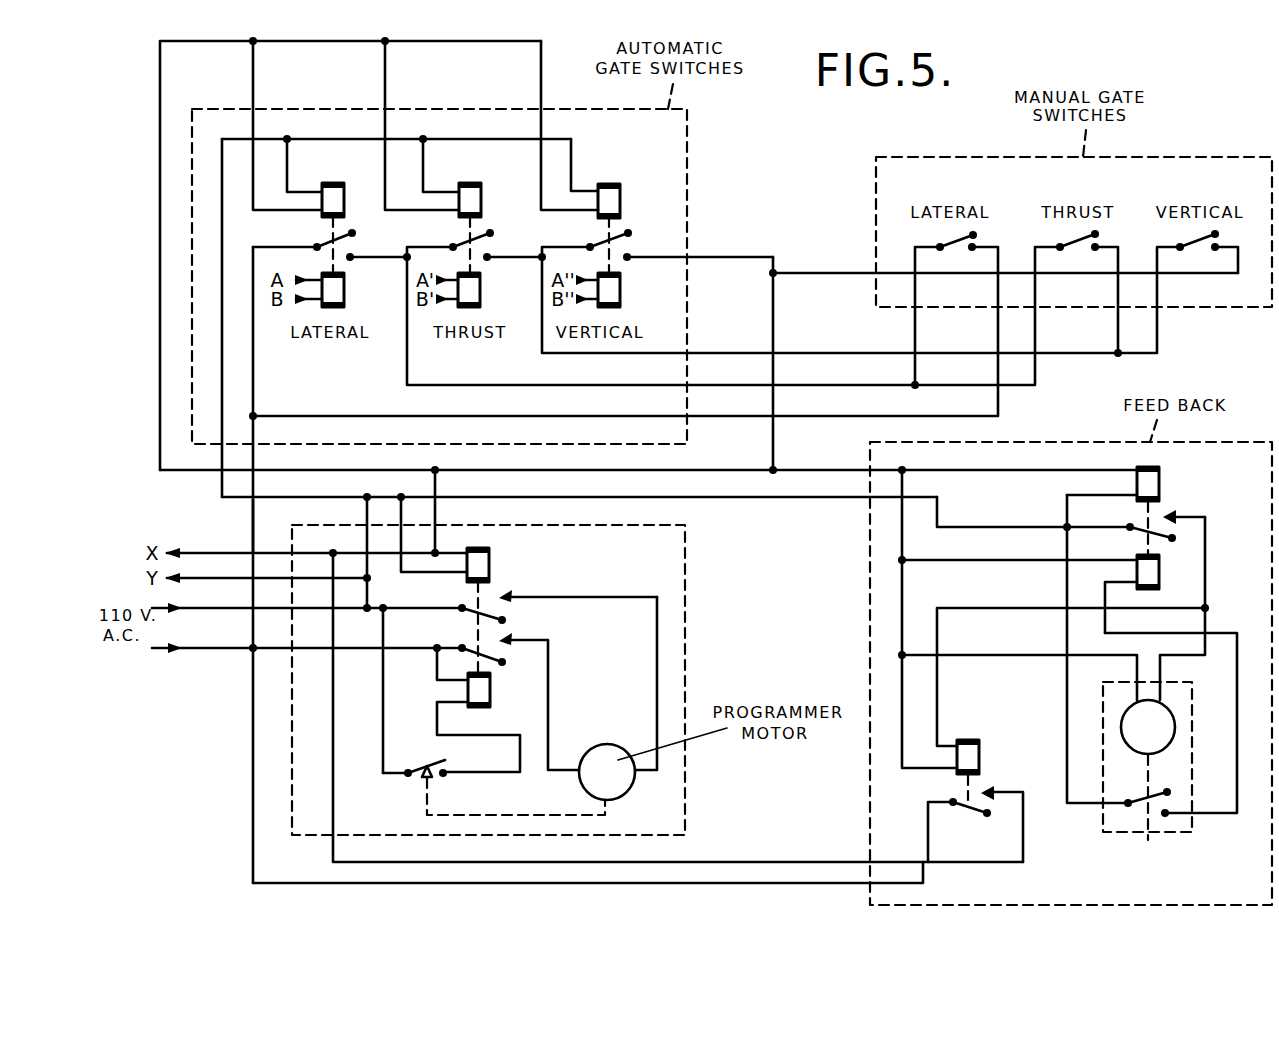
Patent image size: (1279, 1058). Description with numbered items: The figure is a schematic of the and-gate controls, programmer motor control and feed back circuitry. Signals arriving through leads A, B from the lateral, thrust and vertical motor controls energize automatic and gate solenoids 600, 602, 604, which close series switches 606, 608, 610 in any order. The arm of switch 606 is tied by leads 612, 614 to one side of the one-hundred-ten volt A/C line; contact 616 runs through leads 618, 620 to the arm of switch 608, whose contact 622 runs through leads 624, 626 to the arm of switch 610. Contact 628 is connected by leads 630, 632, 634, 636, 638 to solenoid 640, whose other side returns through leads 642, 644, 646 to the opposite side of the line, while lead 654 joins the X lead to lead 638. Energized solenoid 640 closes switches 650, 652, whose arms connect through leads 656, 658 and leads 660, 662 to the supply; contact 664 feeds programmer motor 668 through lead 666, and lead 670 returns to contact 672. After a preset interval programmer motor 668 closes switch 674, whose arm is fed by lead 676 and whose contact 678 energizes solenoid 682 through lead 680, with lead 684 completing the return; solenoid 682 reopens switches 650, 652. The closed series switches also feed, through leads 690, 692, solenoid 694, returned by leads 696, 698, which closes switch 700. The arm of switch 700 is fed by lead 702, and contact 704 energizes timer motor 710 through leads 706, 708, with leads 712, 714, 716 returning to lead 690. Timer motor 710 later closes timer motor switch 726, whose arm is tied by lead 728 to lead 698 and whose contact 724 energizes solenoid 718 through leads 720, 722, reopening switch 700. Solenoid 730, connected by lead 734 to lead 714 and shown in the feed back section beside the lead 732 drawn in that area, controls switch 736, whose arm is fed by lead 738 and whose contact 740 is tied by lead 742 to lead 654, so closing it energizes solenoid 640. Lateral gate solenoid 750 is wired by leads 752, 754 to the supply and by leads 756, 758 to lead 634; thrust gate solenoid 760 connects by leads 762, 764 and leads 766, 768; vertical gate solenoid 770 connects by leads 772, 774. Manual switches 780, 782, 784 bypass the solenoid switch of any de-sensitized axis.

The automatic and gate solenoid 600 is at (346, 296).
The automatic and gate solenoid 602 is at (482, 297).
The automatic and gate solenoid 604 is at (620, 292).
The switch 606 is at (317, 246).
The switch 608 is at (474, 236).
The switch 610 is at (612, 243).
The lead 612 is at (253, 380).
The lead 614 is at (253, 525).
The contact 616 is at (352, 256).
The lead 618 is at (385, 258).
The lead 620 is at (428, 247).
The contact 622 is at (490, 256).
The lead 624 is at (518, 258).
The lead 626 is at (584, 247).
The contact 628 is at (630, 256).
The lead 630 is at (735, 257).
The lead 632 is at (773, 321).
The lead 634 is at (721, 470).
The lead 636 is at (435, 486).
The lead 638 is at (460, 548).
The solenoid 640 is at (490, 563).
The lead 642 is at (447, 573).
The lead 644 is at (370, 497).
The lead 646 is at (367, 512).
The switch 650 is at (497, 602).
The switch 652 is at (510, 618).
The lead 654 is at (388, 555).
The lead 656 is at (413, 610).
The lead 658 is at (375, 609).
The lead 660 is at (460, 648).
The lead 662 is at (362, 652).
The contact 664 is at (512, 597).
The lead 666 is at (620, 597).
The programmer motor 668 is at (609, 744).
The lead 670 is at (548, 672).
The contact 672 is at (508, 648).
The switch 674 is at (425, 767).
The lead 676 is at (393, 775).
The contact 678 is at (446, 770).
The lead 680 is at (520, 735).
The solenoid 682 is at (492, 690).
The lead 684 is at (437, 667).
The lead 690 is at (823, 470).
The lead 692 is at (1000, 470).
The solenoid 694 is at (1158, 485).
The lead 696 is at (1070, 501).
The lead 698 is at (805, 497).
The switch 700 is at (1128, 531).
The lead 702 is at (1107, 526).
The contact 704 is at (1172, 516).
The lead 706 is at (1205, 557).
The lead 708 is at (1210, 615).
The timer motor 710 is at (1172, 712).
The lead 712 is at (1007, 655).
The lead 714 is at (902, 585).
The lead 716 is at (902, 542).
The solenoid 718 is at (1158, 572).
The lead 720 is at (995, 560).
The lead 722 is at (1103, 586).
The contact 724 is at (1165, 817).
The timer motor switch 726 is at (1128, 806).
The lead 728 is at (1067, 715).
The solenoid 730 is at (970, 740).
The wire 732 is at (1000, 608).
The lead 734 is at (908, 770).
The switch 736 is at (973, 808).
The lead 738 is at (727, 883).
The contact 740 is at (990, 790).
The lead 742 is at (766, 862).
The lateral gate solenoid 750 is at (344, 199).
The lead 752 is at (287, 165).
The lead 754 is at (222, 148).
The lead 756 is at (253, 79).
The lead 758 is at (160, 210).
The thrust gate solenoid 760 is at (481, 200).
The lead 762 is at (423, 160).
The lead 764 is at (340, 139).
The lead 766 is at (385, 79).
The lead 768 is at (322, 41).
The vertical gate solenoid 770 is at (620, 200).
The lead 772 is at (571, 150).
The lead 774 is at (541, 79).
The manual switch 780 is at (957, 249).
The manual switch 782 is at (1078, 249).
The manual switch 784 is at (1198, 249).